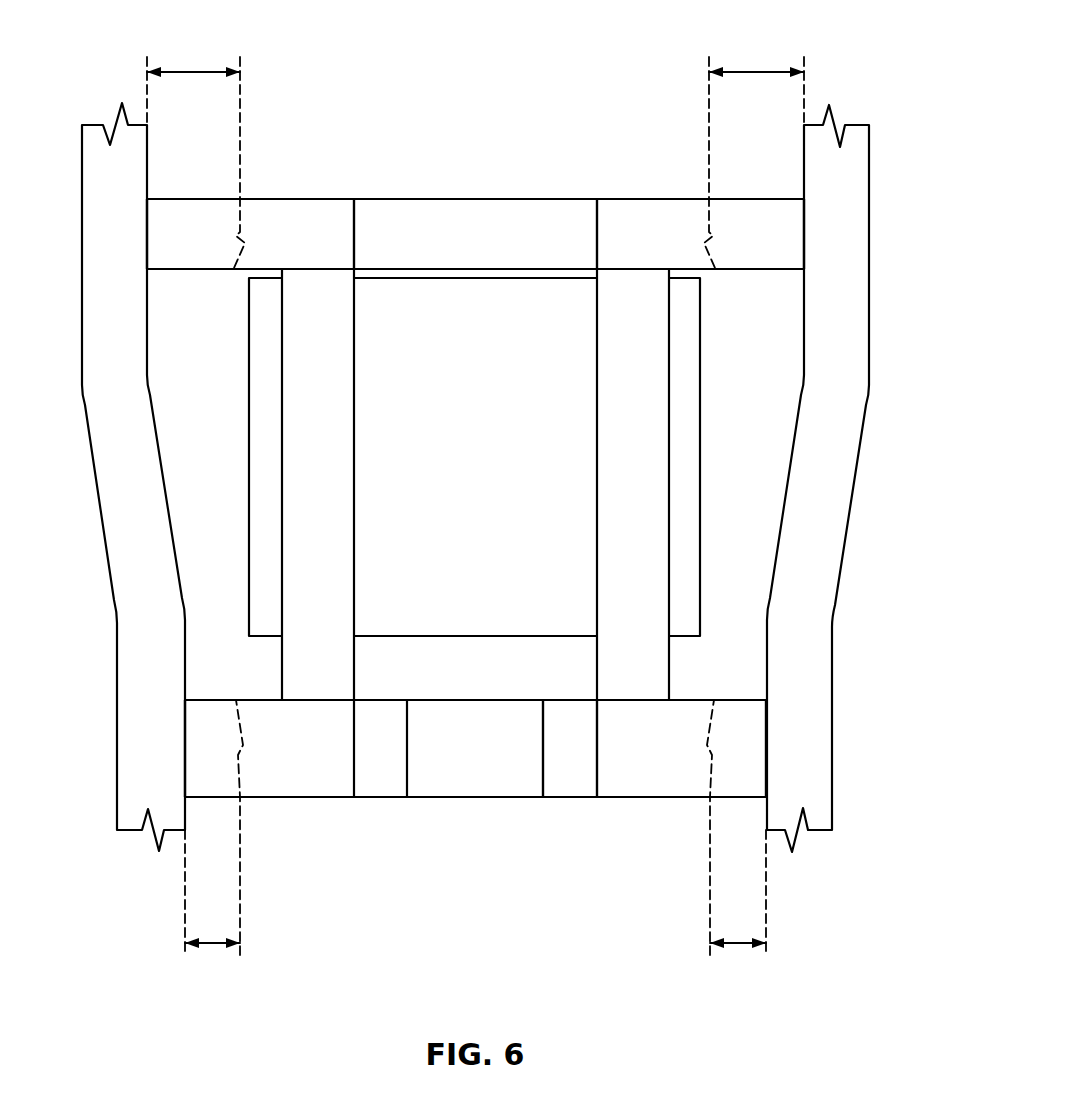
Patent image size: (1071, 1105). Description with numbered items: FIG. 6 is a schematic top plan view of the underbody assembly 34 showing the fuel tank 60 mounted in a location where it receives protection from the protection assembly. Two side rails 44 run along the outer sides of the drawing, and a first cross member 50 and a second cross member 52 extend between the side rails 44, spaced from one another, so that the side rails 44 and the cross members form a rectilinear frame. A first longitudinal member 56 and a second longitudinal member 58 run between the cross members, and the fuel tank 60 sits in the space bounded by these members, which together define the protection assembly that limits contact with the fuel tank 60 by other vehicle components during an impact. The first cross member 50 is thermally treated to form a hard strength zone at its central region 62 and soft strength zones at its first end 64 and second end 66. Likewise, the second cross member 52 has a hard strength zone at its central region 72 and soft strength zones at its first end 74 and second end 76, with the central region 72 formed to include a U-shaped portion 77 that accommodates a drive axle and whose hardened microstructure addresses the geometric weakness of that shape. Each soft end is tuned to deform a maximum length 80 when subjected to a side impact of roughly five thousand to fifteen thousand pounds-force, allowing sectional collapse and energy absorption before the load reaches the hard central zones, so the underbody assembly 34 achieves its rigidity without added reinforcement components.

The underbody assembly 34 is at (855, 142).
The side rails 44 is at (103, 463).
The first cross member 50 is at (475, 210).
The second cross member 52 is at (475, 750).
The first longitudinal member 56 is at (348, 593).
The second longitudinal member 58 is at (607, 593).
The fuel tank 60 is at (575, 435).
The central region 62 is at (455, 222).
The first end 64 is at (277, 222).
The second end 66 is at (648, 222).
The central region 72 is at (572, 777).
The first end 74 is at (300, 777).
The second end 76 is at (668, 777).
The U-shaped portion 77 is at (463, 777).
The maximum length 80 is at (192, 70).